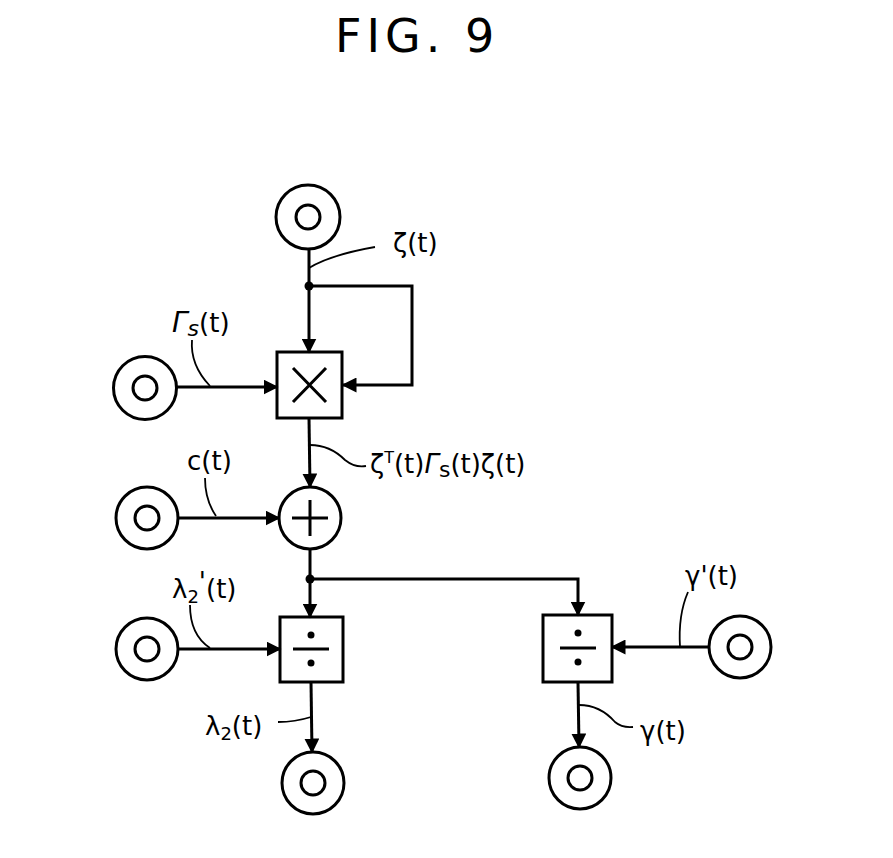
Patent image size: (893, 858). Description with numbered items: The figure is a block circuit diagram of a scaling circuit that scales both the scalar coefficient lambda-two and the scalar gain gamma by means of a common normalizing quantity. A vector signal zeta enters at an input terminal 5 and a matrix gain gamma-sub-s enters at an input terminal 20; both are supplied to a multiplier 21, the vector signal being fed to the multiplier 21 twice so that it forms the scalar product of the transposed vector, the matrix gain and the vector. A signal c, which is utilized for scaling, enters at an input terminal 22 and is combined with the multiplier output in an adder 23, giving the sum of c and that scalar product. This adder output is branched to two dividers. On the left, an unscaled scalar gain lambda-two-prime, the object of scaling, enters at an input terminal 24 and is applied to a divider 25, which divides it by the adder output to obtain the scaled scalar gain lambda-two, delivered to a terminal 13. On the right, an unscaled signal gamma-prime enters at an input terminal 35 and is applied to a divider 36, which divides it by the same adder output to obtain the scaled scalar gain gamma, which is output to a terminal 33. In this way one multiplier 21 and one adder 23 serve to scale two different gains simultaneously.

The input terminal 5 is at (336, 204).
The input terminal 20 is at (120, 366).
The multiplier 21 is at (343, 408).
The input terminal 22 is at (116, 514).
The adder 23 is at (341, 522).
The input terminal 24 is at (128, 676).
The divider 25 is at (343, 665).
The output terminal 13 is at (335, 805).
The divider 36 is at (597, 615).
The input terminal 35 is at (765, 638).
The terminal 33 is at (610, 772).